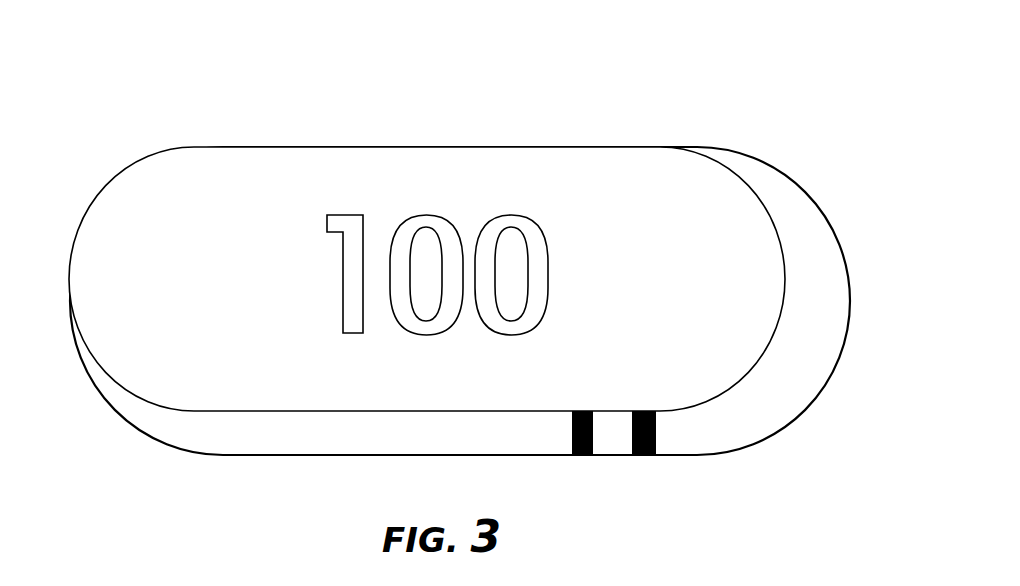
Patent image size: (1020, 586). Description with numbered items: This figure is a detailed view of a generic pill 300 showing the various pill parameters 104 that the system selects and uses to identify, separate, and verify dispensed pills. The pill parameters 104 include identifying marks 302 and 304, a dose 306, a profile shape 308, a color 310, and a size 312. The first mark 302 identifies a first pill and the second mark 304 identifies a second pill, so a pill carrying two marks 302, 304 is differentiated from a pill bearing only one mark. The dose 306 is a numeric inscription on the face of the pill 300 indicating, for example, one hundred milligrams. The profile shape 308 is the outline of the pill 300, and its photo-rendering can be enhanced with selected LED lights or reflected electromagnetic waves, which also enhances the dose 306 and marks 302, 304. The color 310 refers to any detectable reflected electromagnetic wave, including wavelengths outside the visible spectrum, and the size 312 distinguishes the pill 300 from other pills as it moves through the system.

The generic pill 300 is at (473, 276).
The first mark 302 is at (583, 460).
The second mark 304 is at (643, 460).
The dose 306 is at (553, 196).
The profile shape 308 is at (845, 175).
The color 310 is at (420, 226).
The size 312 is at (334, 93).
The pill parameters 104 is at (743, 490).